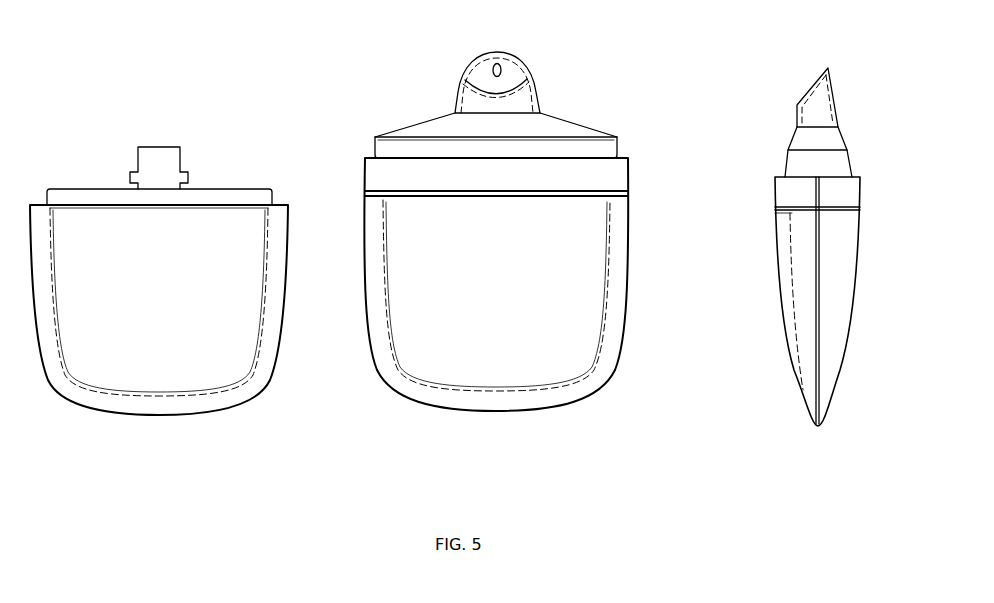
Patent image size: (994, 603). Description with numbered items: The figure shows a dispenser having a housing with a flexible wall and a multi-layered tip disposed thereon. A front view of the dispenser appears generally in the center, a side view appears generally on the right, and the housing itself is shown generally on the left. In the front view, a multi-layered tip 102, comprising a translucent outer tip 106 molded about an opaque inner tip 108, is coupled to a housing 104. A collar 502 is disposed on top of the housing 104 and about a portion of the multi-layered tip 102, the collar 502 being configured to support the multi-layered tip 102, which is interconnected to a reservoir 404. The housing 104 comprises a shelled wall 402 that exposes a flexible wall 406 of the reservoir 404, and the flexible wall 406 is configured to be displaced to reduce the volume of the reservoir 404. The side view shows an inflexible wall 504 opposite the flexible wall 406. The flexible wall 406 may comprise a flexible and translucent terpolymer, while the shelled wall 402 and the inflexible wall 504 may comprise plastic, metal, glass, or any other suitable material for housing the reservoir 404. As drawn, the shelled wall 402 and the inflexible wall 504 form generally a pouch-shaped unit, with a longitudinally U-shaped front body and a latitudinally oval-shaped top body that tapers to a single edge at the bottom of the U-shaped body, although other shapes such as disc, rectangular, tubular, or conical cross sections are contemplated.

The multi-layered tip 102 is at (538, 59).
The housing 104 is at (272, 180).
The translucent outer tip 106 is at (465, 85).
The opaque inner tip 108 is at (458, 107).
The shelled wall 402 is at (595, 399).
The reservoir 404 is at (265, 268).
The flexible wall 406 is at (240, 310).
The collar 502 is at (618, 138).
The inflexible wall 504 is at (861, 222).